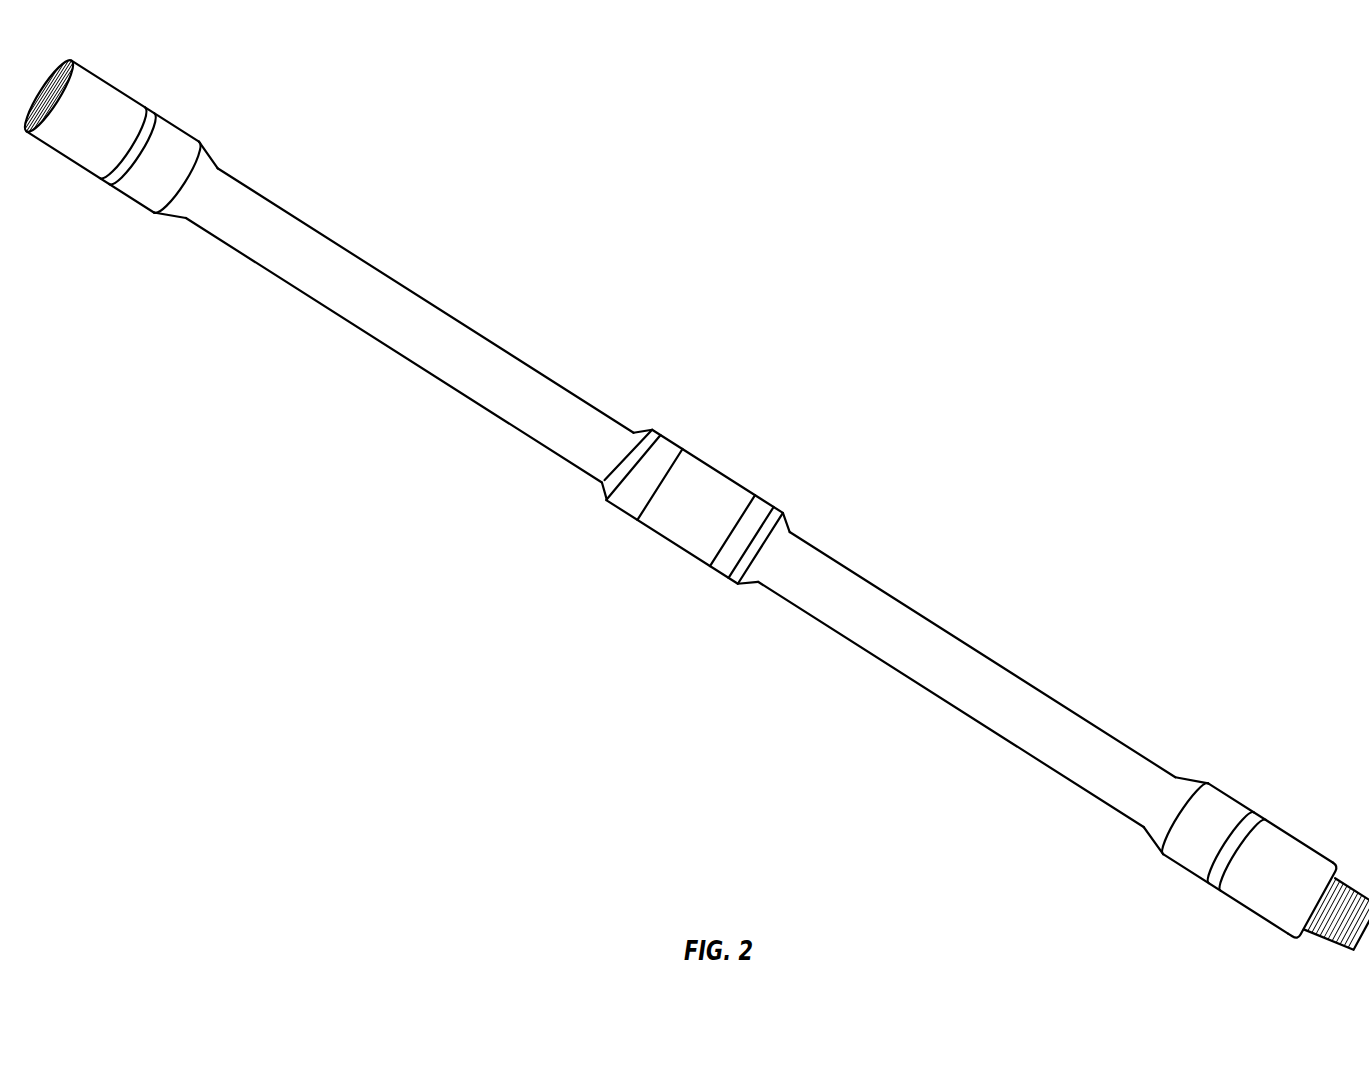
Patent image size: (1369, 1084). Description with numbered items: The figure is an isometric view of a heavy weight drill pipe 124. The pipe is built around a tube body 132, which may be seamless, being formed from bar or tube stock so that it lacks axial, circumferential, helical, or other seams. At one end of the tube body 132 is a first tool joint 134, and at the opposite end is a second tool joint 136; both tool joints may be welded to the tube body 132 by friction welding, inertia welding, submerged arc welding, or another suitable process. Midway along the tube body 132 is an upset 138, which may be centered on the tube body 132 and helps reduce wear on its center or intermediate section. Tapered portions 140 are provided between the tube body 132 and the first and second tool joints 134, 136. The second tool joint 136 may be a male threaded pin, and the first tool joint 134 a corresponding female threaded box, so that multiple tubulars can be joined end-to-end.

The heavy weight drill pipe 124 is at (693, 504).
The tube body 132 is at (348, 283).
The first tool joint 134 is at (170, 77).
The second tool joint 136 is at (1292, 795).
The upset 138 is at (710, 487).
The tapered portions 140 is at (203, 167).